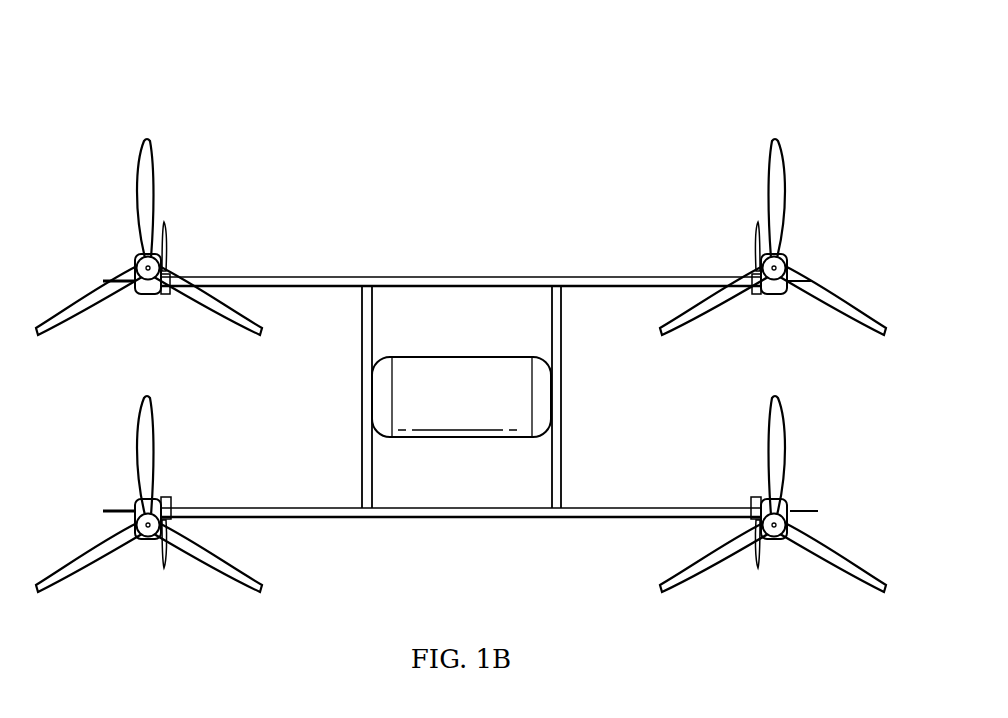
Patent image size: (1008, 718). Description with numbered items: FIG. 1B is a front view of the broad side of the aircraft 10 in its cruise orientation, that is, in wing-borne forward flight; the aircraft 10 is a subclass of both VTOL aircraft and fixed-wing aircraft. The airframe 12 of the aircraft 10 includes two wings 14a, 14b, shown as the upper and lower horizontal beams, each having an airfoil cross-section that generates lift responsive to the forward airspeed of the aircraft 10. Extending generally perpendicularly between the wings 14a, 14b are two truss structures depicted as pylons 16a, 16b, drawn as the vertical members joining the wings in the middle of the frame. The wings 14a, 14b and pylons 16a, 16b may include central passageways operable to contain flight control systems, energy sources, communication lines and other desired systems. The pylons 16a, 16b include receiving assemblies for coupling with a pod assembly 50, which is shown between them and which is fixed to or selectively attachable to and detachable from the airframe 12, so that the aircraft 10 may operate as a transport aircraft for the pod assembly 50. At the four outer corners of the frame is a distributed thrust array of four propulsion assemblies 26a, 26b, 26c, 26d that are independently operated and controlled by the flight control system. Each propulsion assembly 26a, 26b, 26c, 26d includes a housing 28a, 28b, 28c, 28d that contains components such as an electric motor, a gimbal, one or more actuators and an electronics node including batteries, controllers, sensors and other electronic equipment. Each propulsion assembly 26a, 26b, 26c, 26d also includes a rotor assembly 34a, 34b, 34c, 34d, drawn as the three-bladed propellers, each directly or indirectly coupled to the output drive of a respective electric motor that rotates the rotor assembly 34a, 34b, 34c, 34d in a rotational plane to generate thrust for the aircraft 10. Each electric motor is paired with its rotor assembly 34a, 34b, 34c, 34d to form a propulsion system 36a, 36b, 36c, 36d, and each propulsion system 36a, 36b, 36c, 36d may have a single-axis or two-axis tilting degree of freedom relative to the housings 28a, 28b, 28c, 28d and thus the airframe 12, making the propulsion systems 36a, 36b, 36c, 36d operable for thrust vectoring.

The aircraft 10 is at (395, 150).
The airframe 12 is at (606, 268).
The wing 14a is at (318, 517).
The wing 14b is at (330, 277).
The pylon 16a is at (362, 437).
The pylon 16b is at (565, 353).
The propulsion assembly 26a is at (135, 500).
The propulsion assembly 26b is at (788, 500).
The propulsion assembly 26c is at (779, 297).
The propulsion assembly 26d is at (145, 297).
The housing 28a is at (158, 502).
The housing 28b is at (765, 502).
The housing 28c is at (765, 297).
The housing 28d is at (158, 297).
The rotor assembly 34a is at (78, 557).
The rotor assembly 34b is at (850, 555).
The rotor assembly 34c is at (784, 190).
The rotor assembly 34d is at (138, 190).
The propulsion system 36a is at (145, 551).
The propulsion system 36b is at (778, 551).
The propulsion system 36c is at (799, 253).
The propulsion system 36d is at (123, 253).
The pod assembly 50 is at (476, 412).